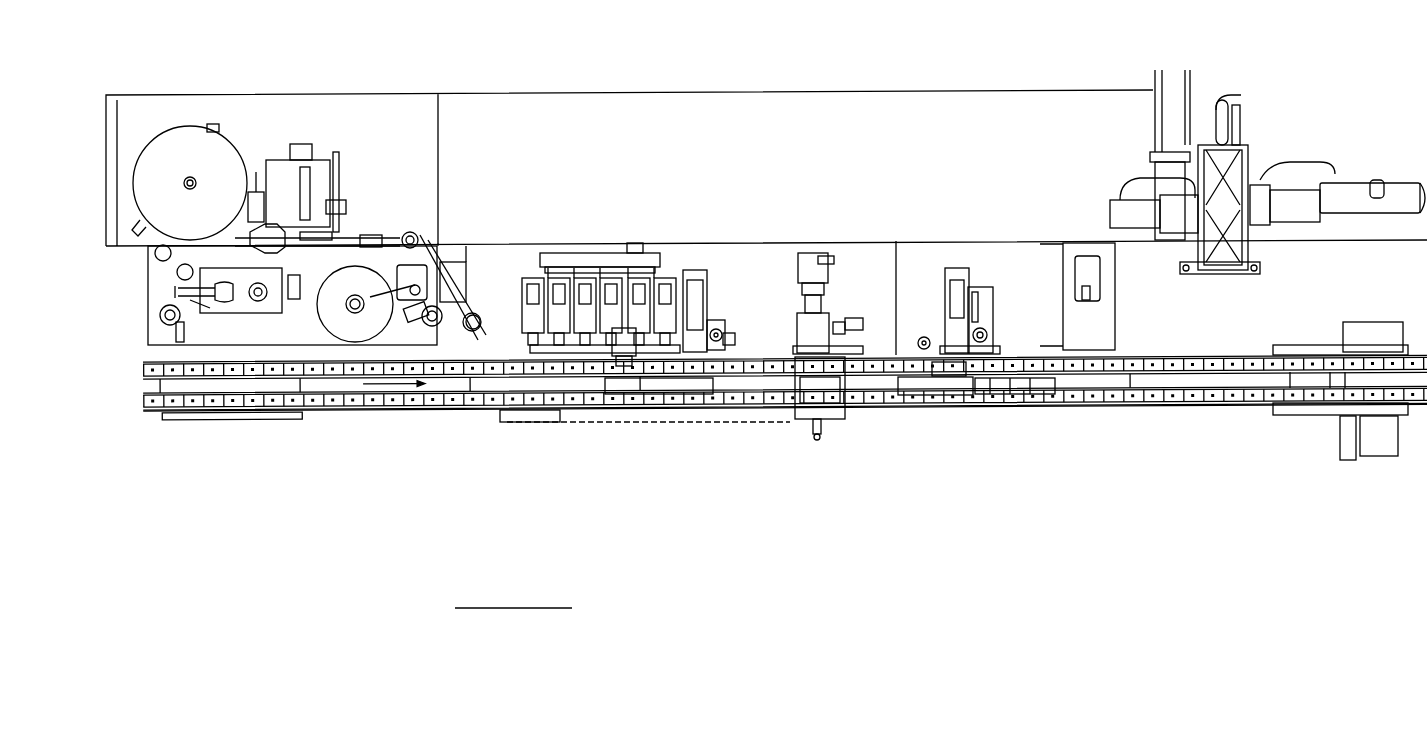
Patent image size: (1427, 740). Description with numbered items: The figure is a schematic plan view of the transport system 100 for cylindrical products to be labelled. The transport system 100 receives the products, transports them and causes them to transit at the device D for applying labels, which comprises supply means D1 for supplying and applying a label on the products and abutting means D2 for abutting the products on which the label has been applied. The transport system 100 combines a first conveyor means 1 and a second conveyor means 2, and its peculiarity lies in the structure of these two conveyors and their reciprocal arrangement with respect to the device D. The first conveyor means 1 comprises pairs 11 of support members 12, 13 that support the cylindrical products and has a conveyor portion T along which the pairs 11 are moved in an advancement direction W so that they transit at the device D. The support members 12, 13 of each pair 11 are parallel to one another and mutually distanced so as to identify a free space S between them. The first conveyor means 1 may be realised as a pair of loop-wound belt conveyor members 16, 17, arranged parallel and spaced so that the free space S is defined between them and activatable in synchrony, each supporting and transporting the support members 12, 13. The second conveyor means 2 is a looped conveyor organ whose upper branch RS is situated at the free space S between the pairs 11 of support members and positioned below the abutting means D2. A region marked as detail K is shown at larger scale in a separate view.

The transport system 100 is at (760, 348).
The first conveyor means 1 is at (760, 494).
The pairs of support members 11 is at (200, 413).
The support member 12 is at (785, 500).
The support member 13 is at (230, 362).
The belt conveyor member 16 is at (335, 420).
The belt conveyor member 17 is at (290, 363).
The advancement direction W is at (399, 412).
The conveyor portion T is at (448, 413).
The detail K is at (507, 405).
The free space S is at (583, 412).
The supply means D1 is at (790, 353).
The device for applying labels D is at (882, 333).
The abutting means D2 is at (990, 353).
The second conveyor means 2 is at (1015, 402).
The upper branch RS is at (1040, 402).